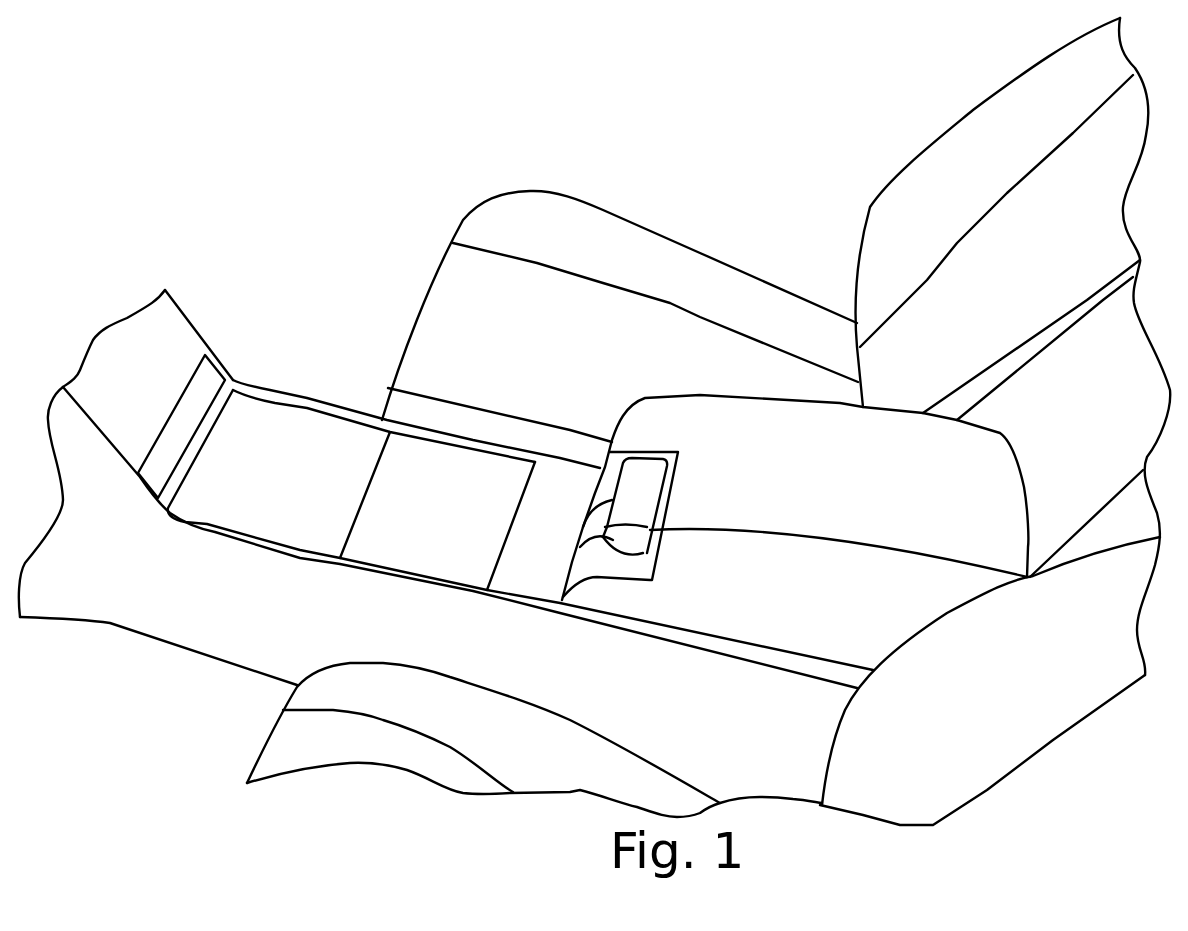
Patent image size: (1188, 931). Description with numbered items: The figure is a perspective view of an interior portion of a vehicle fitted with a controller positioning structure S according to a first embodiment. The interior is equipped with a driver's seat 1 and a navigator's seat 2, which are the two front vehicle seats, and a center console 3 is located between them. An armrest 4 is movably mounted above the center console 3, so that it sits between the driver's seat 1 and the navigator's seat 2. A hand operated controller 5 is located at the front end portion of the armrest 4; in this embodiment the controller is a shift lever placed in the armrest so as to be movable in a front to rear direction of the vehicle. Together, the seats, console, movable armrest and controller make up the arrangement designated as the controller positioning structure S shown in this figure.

The driver's seat 1 is at (443, 287).
The navigator's seat 2 is at (270, 757).
The center console 3 is at (133, 608).
The armrest 4 is at (783, 420).
The hand operated controller 5 is at (647, 467).
The controller positioning structure S is at (601, 403).